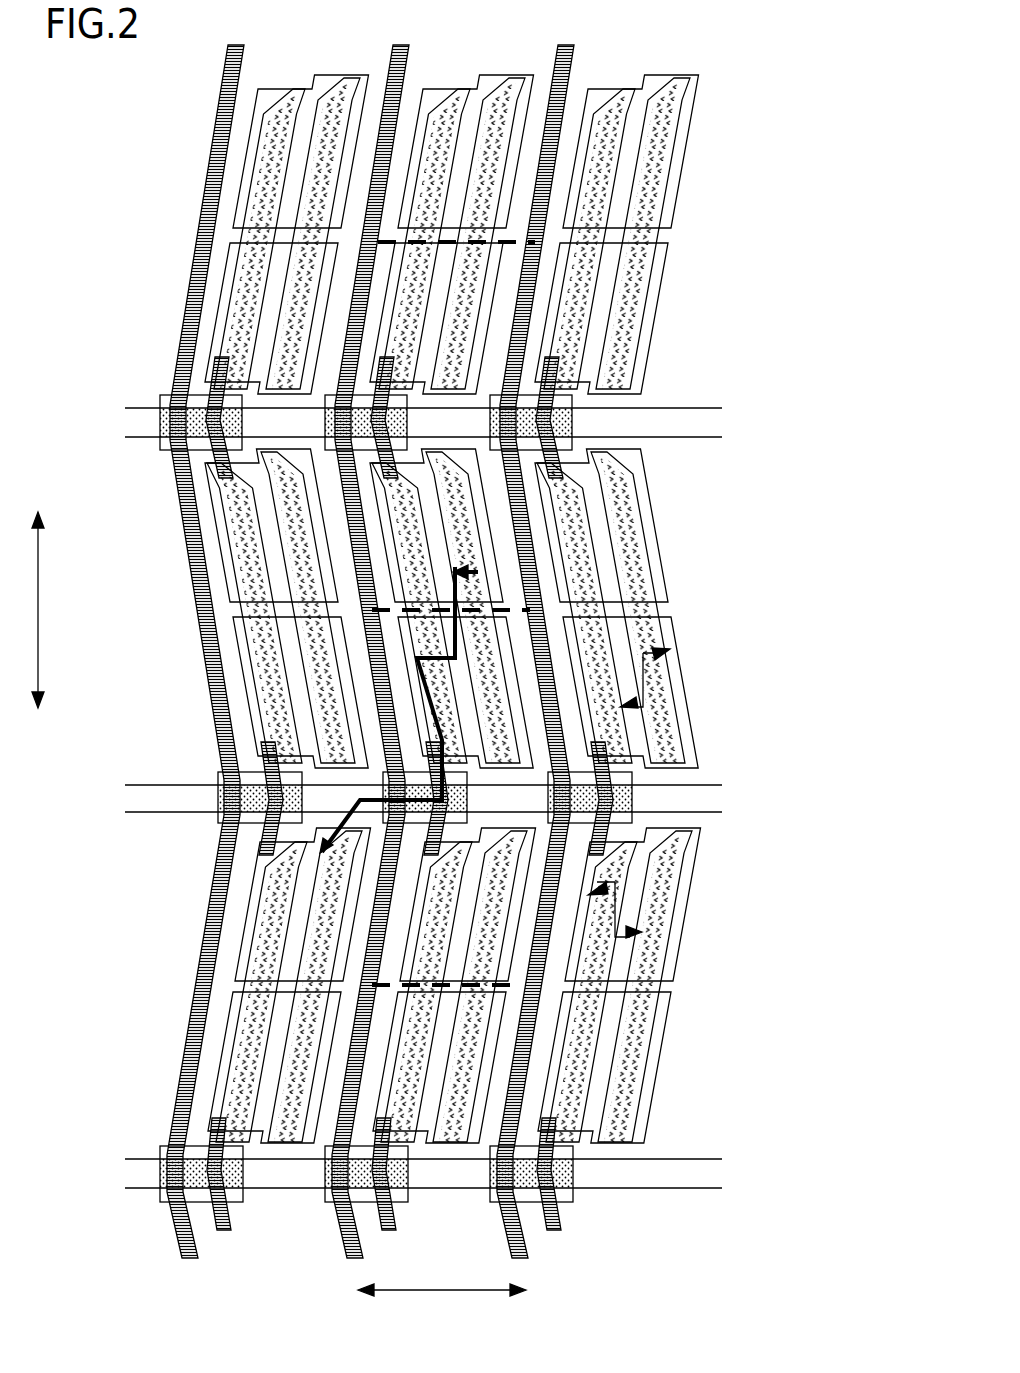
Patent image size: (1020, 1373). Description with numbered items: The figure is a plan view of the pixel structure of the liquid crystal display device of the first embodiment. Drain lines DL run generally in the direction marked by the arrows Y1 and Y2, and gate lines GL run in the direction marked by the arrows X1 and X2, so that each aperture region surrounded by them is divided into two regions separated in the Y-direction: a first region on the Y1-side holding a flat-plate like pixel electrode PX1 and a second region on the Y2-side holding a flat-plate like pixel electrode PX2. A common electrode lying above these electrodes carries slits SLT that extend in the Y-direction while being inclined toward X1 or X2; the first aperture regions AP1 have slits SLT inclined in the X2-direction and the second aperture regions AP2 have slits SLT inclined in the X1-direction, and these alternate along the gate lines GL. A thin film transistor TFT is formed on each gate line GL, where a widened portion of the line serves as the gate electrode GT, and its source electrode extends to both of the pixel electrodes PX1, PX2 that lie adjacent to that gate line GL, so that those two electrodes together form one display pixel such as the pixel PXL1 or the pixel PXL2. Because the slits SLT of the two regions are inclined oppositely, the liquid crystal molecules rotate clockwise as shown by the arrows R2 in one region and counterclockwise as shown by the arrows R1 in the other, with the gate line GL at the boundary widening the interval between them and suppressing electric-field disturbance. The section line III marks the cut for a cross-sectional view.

The drain line DL is at (570, 67).
The gate line GL is at (680, 1177).
The pixel PXL1 is at (372, 958).
The pixel PXL2 is at (345, 342).
The pixel electrode PX1 is at (518, 658).
The pixel electrode PX2 is at (518, 945).
The first aperture region AP1 is at (378, 550).
The second aperture region AP2 is at (400, 922).
The thin film transistor TFT is at (367, 777).
The gate electrode GT is at (433, 1098).
The slit SLT is at (507, 718).
The arrows R1 is at (620, 908).
The arrows R2 is at (668, 682).
The section line III- III is at (427, 613).
The X1-direction X1 is at (380, 1291).
The X2-direction X2 is at (506, 1291).
The Y1-direction Y1 is at (40, 679).
The Y2-direction Y2 is at (40, 545).